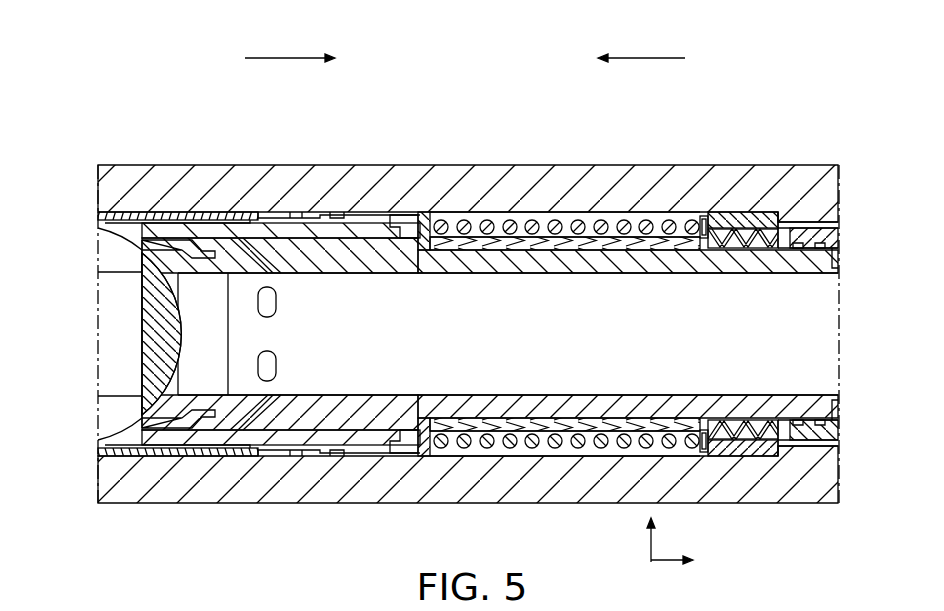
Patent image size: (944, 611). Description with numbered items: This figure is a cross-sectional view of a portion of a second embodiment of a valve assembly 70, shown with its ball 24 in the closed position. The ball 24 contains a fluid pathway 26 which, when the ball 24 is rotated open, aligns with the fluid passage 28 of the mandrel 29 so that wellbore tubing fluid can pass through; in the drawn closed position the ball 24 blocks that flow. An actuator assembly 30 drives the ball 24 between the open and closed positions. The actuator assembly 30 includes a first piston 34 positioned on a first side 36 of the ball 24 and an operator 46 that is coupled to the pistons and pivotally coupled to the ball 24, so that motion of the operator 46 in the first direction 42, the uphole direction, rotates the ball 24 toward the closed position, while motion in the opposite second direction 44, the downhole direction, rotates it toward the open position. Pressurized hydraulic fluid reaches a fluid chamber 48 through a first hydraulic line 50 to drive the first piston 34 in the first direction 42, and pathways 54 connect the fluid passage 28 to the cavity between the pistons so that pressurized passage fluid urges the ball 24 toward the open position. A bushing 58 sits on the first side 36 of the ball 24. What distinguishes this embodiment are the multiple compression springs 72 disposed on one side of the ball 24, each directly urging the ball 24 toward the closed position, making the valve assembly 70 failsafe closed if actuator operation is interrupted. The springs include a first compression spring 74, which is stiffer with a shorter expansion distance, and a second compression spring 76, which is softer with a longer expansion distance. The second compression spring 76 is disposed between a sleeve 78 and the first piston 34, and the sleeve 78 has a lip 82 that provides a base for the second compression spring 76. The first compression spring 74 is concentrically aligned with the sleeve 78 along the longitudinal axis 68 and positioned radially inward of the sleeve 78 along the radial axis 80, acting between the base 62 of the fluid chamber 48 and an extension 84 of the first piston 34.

The ball 24 is at (158, 328).
The fluid pathway 26 is at (140, 297).
The fluid passage 28 is at (391, 275).
The mandrel 29 is at (560, 256).
The actuator assembly 30 is at (278, 153).
The first piston 34 is at (349, 212).
The first side 36 is at (398, 151).
The first direction 42 is at (648, 58).
The second direction 44 is at (284, 58).
The operator 46 is at (118, 226).
The fluid chamber 48 is at (594, 216).
The first hydraulic line 50 is at (798, 222).
The pathway 54 is at (283, 302).
The bushing 58 is at (172, 412).
The base of the fluid chamber 62 is at (772, 244).
The longitudinal axis 68 is at (655, 563).
The valve assembly 70 is at (558, 75).
The multiple compression springs 72 is at (627, 153).
The first compression spring 74 is at (718, 236).
The second compression spring 76 is at (650, 228).
The sleeve 78 is at (746, 452).
The radial axis 80 is at (651, 548).
The lip 82 is at (702, 216).
The extension 84 is at (518, 241).